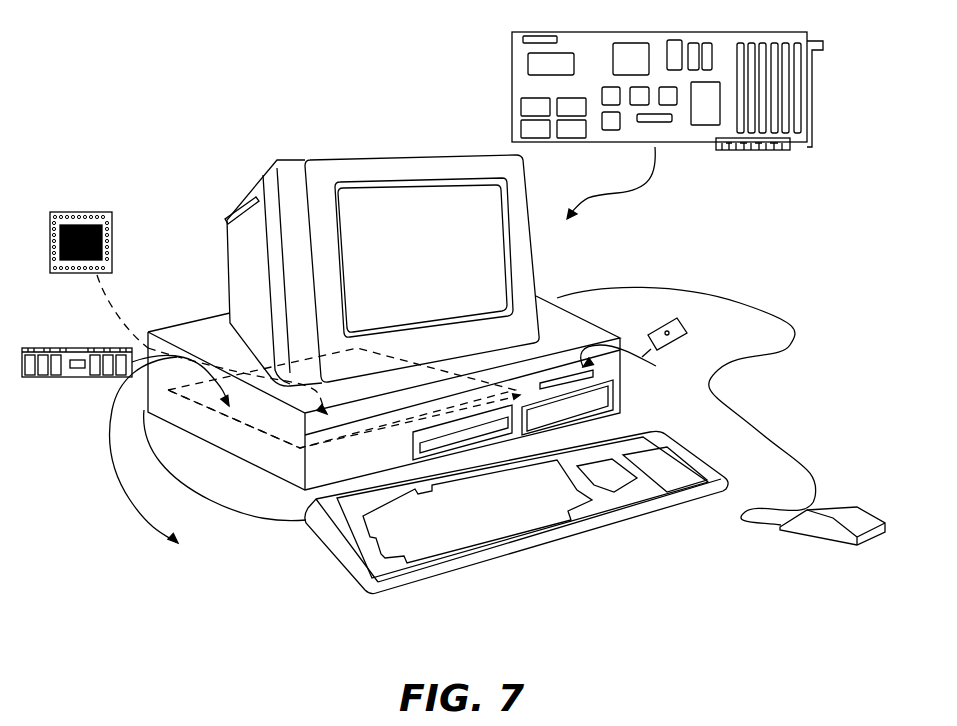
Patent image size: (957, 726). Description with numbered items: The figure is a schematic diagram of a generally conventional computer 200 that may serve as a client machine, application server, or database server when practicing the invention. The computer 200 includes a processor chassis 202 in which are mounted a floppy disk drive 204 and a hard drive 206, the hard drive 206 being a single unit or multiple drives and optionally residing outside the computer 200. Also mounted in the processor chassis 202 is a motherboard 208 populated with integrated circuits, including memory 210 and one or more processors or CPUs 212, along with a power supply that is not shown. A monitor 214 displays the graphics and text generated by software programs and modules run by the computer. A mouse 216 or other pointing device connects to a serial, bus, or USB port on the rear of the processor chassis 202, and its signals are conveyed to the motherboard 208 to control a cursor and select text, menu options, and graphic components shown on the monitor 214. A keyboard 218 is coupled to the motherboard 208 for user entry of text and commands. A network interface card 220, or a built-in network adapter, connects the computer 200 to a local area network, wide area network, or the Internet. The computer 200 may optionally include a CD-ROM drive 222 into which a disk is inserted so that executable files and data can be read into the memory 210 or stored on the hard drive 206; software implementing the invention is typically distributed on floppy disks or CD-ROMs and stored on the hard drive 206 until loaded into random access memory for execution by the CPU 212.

The computer 200 is at (531, 568).
The processor chassis 202 is at (636, 347).
The floppy disk drive 204 is at (612, 347).
The hard drive 206 is at (594, 402).
The motherboard 208 is at (247, 427).
The memory 210 is at (53, 348).
The processors (CPUs) 212 is at (112, 260).
The monitor 214 is at (529, 218).
The mouse 216 is at (830, 534).
The keyboard 218 is at (615, 527).
The network interface card 220 is at (806, 82).
The compact disk-read only memory (CD-ROM) drive 222 is at (411, 445).